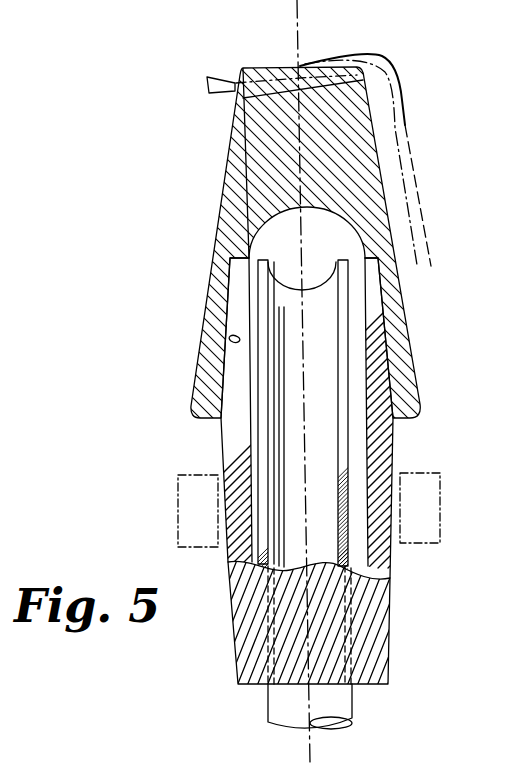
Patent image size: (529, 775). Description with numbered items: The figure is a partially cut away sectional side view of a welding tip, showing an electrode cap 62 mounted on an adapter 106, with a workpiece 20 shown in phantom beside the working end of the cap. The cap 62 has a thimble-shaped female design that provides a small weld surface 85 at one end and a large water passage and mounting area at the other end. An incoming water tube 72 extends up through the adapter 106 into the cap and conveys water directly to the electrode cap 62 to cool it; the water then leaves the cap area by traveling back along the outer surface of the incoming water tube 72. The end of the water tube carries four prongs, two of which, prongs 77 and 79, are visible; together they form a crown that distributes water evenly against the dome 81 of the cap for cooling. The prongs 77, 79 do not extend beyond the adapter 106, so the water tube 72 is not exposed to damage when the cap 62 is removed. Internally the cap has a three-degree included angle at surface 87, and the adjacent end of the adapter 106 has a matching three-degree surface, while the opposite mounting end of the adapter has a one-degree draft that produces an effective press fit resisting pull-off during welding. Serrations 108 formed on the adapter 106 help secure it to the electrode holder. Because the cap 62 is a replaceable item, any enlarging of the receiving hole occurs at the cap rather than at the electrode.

The workpiece 20 is at (412, 150).
The electrode cap 62 is at (222, 210).
The incoming water tube 72 is at (345, 350).
The prong 77 is at (262, 260).
The prong 79 is at (340, 254).
The dome 81 is at (310, 216).
The weld surface 85 is at (251, 66).
The internal surface 87 is at (238, 337).
The adapter 106 is at (222, 448).
The serrations 108 is at (383, 645).